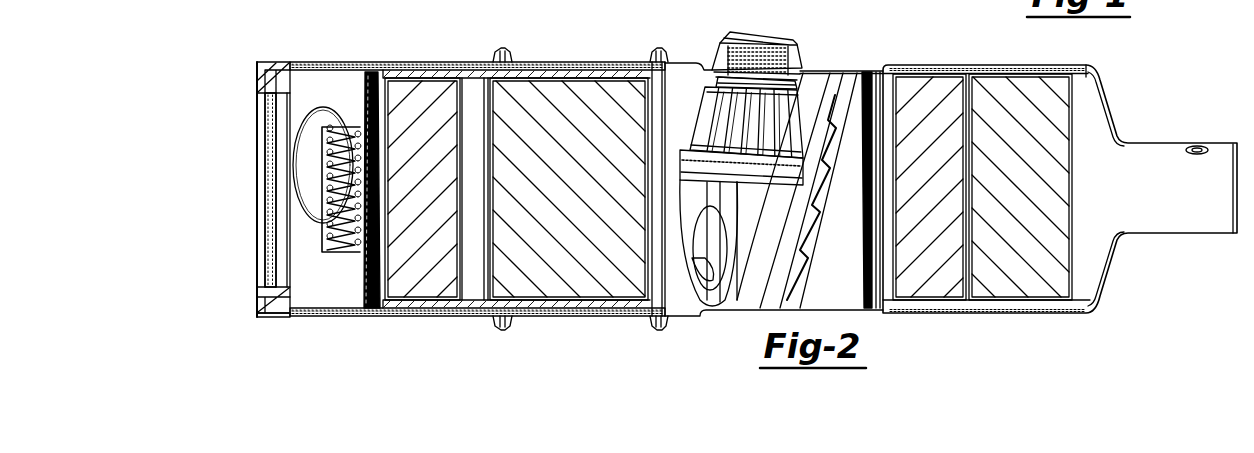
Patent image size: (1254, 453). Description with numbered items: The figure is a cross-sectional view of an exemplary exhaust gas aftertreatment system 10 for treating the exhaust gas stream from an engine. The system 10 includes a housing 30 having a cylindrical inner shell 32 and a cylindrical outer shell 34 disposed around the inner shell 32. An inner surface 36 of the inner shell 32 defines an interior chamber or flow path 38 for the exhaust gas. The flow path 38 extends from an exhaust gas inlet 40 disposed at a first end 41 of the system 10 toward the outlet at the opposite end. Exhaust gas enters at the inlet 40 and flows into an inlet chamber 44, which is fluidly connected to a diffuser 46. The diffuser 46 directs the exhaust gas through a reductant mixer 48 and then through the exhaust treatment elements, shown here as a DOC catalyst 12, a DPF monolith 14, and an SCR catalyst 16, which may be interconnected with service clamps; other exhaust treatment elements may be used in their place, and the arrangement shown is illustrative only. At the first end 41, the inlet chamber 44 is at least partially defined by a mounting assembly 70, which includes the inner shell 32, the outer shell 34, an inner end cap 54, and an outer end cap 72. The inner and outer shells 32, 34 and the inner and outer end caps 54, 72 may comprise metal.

The system 10 is at (707, 187).
The DOC catalyst 12 is at (417, 287).
The DPF monolith 14 is at (563, 287).
The SCR catalyst 16 is at (1070, 318).
The housing 30 is at (586, 158).
The inner shell 32 is at (522, 62).
The outer shell 34 is at (450, 62).
The inner surface 36 is at (287, 83).
The flow path 38 is at (316, 288).
The exhaust gas inlet 40 is at (310, 148).
The first end 41 is at (238, 200).
The inlet chamber 44 is at (300, 265).
The diffuser 46 is at (360, 253).
The reductant mixer 48 is at (732, 262).
The inner end cap 54 is at (268, 237).
The mounting assembly 70 is at (257, 310).
The outer end cap 72 is at (265, 117).